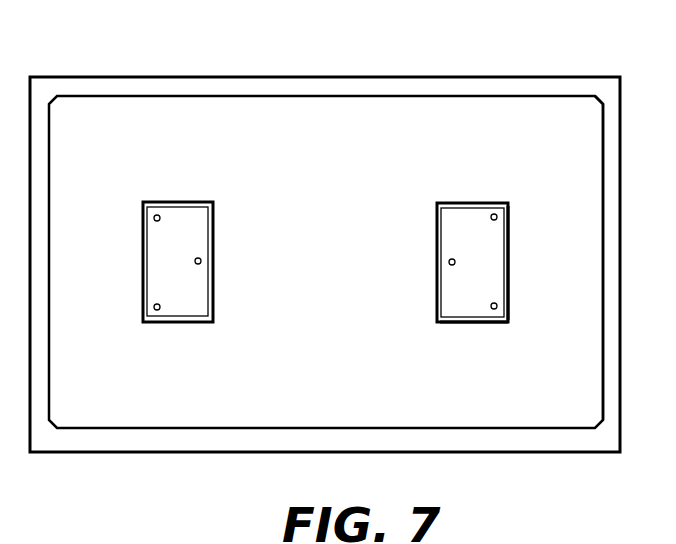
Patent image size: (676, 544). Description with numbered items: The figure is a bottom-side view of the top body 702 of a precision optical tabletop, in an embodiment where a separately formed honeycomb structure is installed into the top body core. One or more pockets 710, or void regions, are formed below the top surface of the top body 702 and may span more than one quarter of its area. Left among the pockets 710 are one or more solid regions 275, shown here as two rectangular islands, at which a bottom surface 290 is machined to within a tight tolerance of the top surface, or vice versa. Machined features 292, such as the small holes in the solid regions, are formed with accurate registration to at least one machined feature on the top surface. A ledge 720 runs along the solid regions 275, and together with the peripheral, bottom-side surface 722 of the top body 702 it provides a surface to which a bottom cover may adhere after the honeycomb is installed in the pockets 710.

The top body 702 is at (208, 82).
The pocket 710 is at (323, 150).
The peripheral, bottom-side surface 722 is at (612, 160).
The bottom surface 290 is at (190, 283).
The machined features 292 is at (160, 216).
The ledge 720 is at (510, 205).
The solid region 275 is at (510, 313).